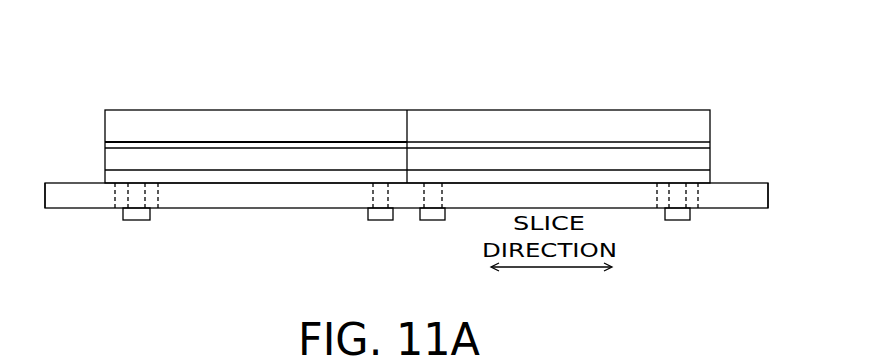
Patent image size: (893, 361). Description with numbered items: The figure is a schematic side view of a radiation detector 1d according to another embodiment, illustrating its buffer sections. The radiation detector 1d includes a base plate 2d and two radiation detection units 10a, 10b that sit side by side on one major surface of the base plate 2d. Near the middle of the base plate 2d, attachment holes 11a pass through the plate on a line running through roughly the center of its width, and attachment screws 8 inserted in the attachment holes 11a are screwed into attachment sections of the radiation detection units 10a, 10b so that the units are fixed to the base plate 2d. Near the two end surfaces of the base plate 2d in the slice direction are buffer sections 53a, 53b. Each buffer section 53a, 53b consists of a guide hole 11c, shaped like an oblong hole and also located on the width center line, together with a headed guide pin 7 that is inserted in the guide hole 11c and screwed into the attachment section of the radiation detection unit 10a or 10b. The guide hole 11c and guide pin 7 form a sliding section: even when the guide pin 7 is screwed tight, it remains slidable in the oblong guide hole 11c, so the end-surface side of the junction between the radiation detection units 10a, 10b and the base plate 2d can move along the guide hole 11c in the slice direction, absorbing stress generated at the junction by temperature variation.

The radiation detector 1d is at (724, 75).
The base plate 2d is at (737, 182).
The radiation detection unit 10a is at (249, 101).
The radiation detection unit 10b is at (561, 101).
The headed guide pin 7 is at (132, 223).
The attachment screw 8 is at (370, 222).
The attachment hole 11a is at (370, 191).
The guide hole 11c is at (161, 190).
The buffer section 53a is at (94, 241).
The buffer section 53b is at (719, 241).